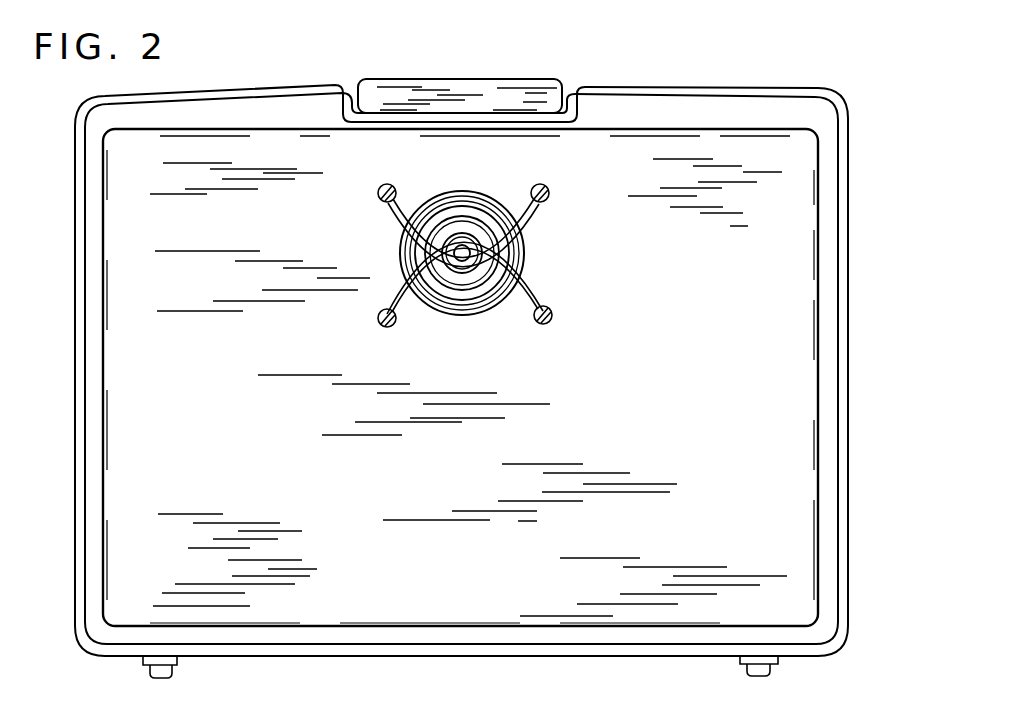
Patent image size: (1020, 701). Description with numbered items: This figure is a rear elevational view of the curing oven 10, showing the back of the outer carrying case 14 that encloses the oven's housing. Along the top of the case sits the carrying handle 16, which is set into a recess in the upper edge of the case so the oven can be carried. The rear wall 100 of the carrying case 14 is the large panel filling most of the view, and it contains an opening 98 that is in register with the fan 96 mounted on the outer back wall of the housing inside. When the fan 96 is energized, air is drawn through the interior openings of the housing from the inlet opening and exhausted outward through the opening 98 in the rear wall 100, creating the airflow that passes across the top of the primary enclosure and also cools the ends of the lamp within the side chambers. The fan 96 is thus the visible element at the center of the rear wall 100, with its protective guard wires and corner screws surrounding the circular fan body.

The curing oven 10 is at (800, 86).
The outer carrying case 14 is at (849, 193).
The carrying handle 16 is at (537, 88).
The fan 96 is at (483, 294).
The opening 98 is at (499, 259).
The rear wall 100 is at (720, 322).